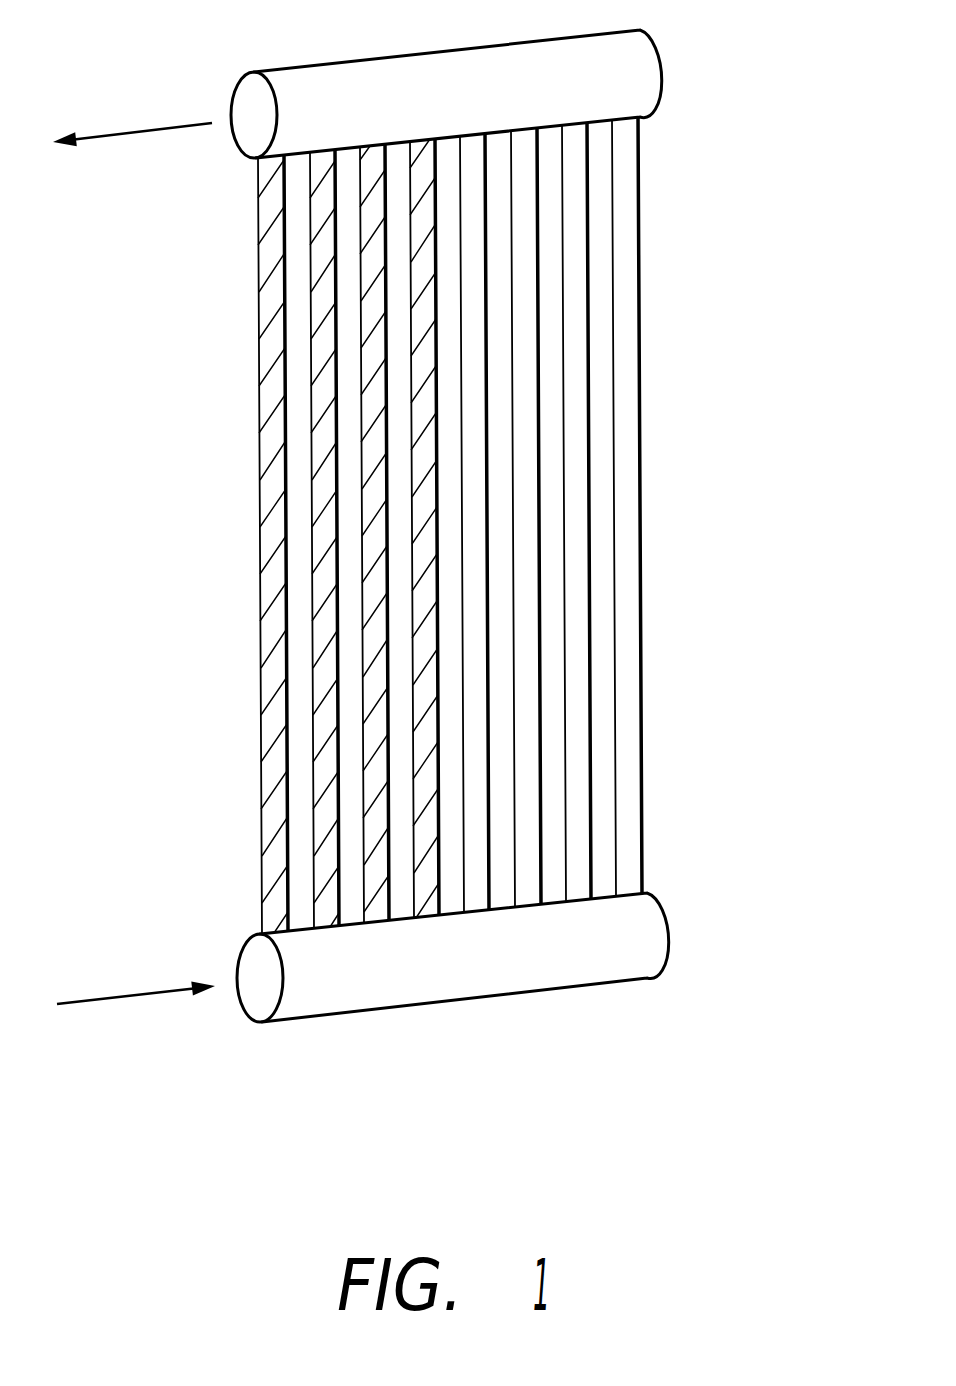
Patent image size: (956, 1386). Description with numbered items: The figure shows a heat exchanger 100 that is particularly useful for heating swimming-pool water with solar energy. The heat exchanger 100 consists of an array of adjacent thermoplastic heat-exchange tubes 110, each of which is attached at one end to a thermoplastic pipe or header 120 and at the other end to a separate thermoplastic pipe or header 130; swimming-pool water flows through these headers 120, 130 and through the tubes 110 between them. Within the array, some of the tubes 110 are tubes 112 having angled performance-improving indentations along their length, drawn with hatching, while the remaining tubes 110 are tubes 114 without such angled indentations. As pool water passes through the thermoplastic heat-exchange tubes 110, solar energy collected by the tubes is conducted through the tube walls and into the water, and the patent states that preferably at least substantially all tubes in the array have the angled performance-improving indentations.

The heat exchanger 100 is at (453, 594).
The thermoplastic heat-exchange tubes 110 is at (478, 493).
The tubes with angled performance-improving indentations 112 is at (320, 551).
The tubes without angled performance-improving indentations 114 is at (627, 687).
The thermoplastic pipe or header 120 is at (651, 944).
The thermoplastic pipe or header 130 is at (641, 80).